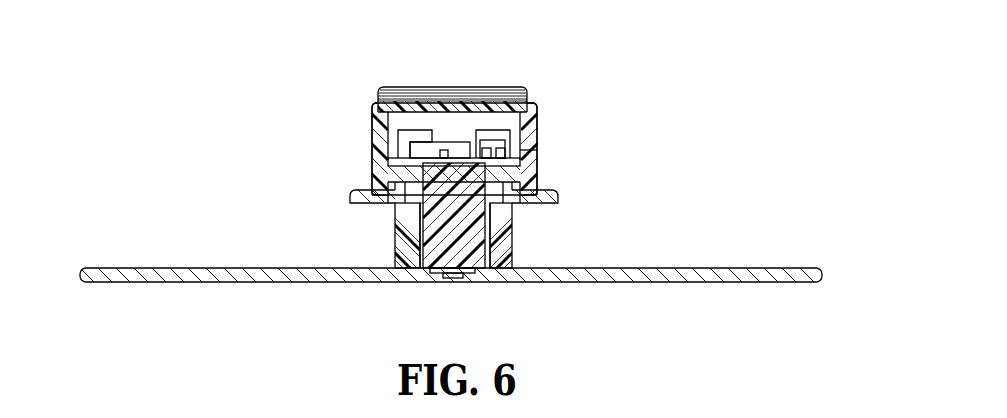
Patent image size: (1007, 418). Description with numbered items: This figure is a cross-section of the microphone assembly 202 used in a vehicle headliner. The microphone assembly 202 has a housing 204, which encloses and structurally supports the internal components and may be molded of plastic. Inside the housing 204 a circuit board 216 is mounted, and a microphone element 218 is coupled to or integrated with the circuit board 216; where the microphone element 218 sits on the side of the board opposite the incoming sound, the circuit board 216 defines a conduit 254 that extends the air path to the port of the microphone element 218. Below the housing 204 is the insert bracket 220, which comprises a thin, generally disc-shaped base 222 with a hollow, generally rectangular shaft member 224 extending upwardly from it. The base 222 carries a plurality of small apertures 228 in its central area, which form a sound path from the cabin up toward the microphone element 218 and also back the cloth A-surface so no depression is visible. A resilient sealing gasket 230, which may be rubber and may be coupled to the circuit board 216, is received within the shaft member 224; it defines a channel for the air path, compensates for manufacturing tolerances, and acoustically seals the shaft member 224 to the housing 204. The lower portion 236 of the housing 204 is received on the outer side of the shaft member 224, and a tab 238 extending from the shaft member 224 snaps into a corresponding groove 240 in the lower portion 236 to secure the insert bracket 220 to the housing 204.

The microphone assembly 202 is at (187, 108).
The housing 204 is at (380, 88).
The circuit board 216 is at (540, 150).
The microphone element 218 is at (452, 142).
The insert bracket 220 is at (172, 245).
The base 222 is at (678, 266).
The shaft member 224 is at (398, 246).
The apertures 228 is at (450, 280).
The sealing gasket 230 is at (453, 218).
The lower portion 236 is at (510, 257).
The tab 238 is at (375, 135).
The groove 240 is at (408, 240).
The conduit 254 is at (448, 158).